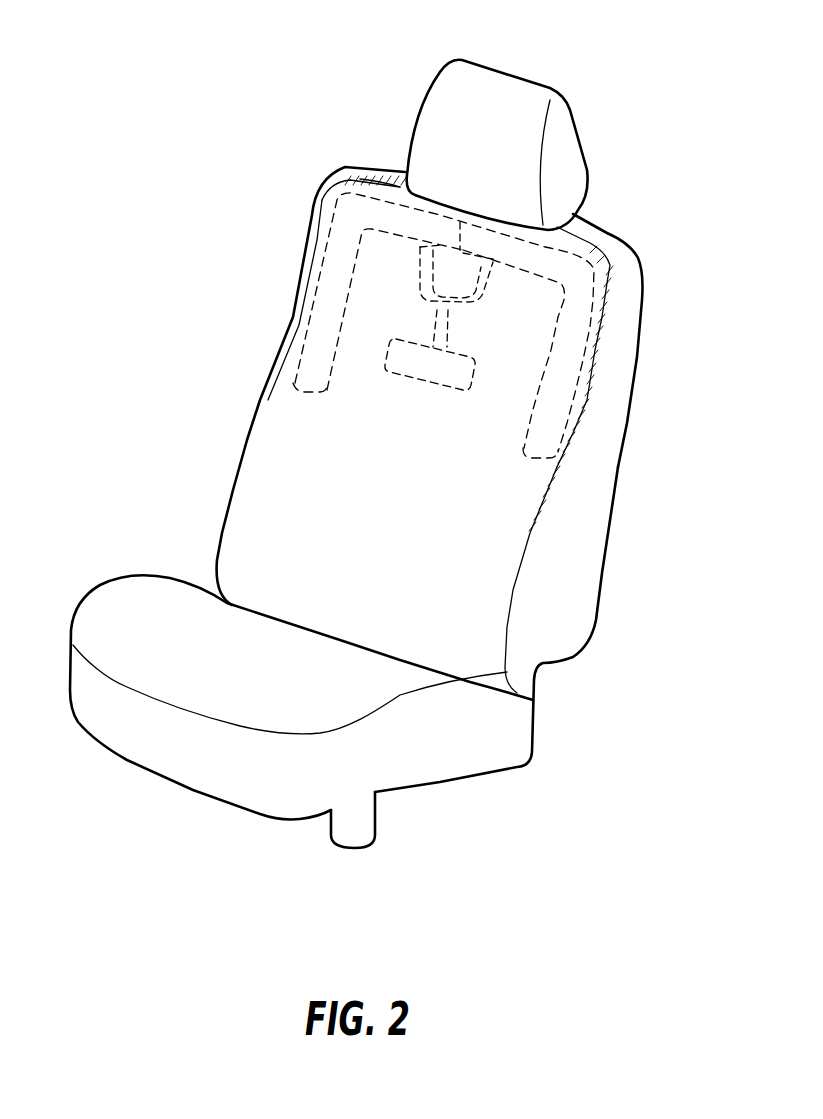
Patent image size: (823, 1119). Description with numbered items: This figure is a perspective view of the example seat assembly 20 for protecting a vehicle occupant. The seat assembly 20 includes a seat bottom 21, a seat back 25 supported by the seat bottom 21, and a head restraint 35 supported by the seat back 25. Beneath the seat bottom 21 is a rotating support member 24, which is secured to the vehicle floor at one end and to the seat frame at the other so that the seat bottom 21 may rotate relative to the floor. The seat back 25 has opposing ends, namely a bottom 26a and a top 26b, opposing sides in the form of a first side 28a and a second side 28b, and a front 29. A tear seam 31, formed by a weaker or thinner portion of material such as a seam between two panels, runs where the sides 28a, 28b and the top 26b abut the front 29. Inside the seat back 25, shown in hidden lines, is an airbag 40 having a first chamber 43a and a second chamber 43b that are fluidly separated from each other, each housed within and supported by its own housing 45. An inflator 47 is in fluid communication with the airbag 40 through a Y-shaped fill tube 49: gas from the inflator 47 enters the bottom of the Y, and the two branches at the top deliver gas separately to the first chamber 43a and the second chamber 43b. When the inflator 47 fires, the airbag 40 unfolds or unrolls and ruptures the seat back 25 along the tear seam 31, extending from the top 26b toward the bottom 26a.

The seat assembly 20 is at (126, 73).
The seat bottom 21 is at (440, 743).
The rotating support member 24 is at (360, 835).
The seat back 25 is at (429, 438).
The bottom 26a is at (527, 653).
The top 26b is at (590, 228).
The first side 28a is at (258, 410).
The second side 28b is at (582, 547).
The front 29 is at (401, 519).
The tear seam 31 is at (352, 172).
The head restraint 35 is at (557, 133).
The airbag 40 is at (318, 337).
The first chamber 43a is at (330, 287).
The second chamber 43b is at (573, 298).
The housing 45 is at (308, 235).
The inflator 47 is at (430, 378).
The fill tube 49 is at (477, 317).